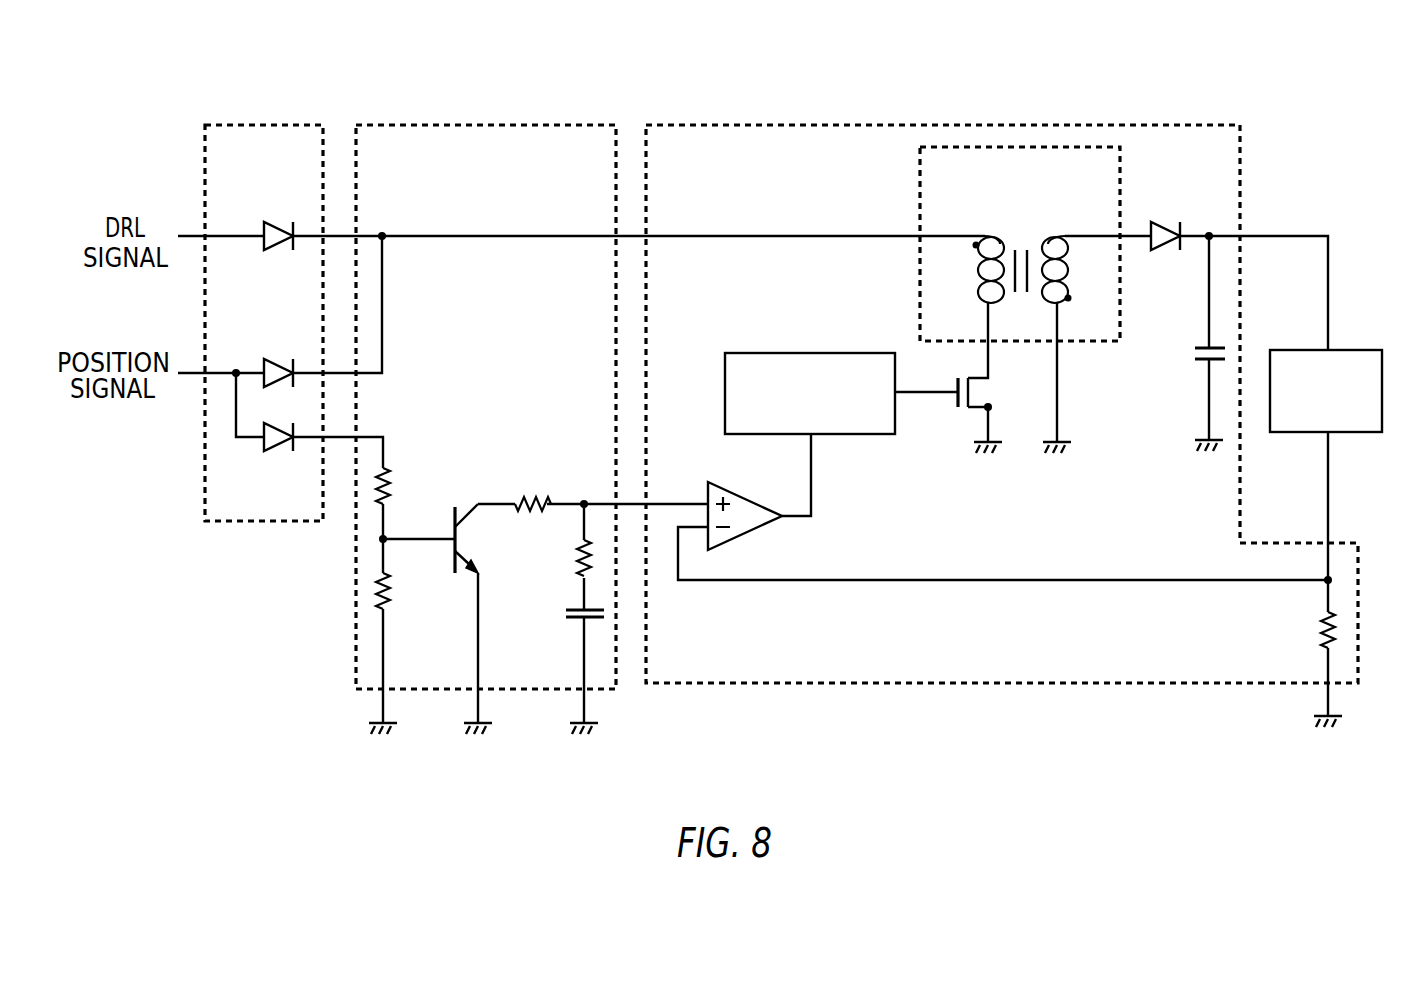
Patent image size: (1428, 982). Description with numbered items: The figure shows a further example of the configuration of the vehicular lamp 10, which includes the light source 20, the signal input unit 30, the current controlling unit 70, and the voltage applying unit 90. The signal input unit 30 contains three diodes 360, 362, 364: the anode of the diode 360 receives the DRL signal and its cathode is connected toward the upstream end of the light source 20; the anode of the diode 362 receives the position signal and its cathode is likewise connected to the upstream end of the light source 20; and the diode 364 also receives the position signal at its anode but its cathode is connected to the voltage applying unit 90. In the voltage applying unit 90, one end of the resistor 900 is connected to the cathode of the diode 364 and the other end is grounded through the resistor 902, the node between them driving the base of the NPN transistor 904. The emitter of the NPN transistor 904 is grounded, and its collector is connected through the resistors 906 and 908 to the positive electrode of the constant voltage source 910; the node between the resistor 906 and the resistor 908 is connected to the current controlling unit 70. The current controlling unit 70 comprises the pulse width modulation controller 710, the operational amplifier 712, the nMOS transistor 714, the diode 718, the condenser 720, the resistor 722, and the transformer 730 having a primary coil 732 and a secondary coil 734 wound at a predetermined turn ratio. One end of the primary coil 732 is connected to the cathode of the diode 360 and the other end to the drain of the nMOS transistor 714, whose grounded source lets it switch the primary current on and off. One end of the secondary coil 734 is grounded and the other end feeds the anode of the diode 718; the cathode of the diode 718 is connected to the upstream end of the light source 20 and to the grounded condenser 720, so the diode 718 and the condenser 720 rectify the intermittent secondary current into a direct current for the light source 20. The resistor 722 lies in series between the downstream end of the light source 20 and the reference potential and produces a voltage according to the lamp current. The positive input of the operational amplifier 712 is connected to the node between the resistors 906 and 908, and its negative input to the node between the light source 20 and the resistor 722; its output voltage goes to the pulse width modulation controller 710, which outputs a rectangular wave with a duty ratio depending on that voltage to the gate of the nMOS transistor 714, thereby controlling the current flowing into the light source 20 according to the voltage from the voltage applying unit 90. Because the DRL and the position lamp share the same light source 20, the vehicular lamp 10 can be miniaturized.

The vehicular lamp 10 is at (1345, 67).
The light source 20 is at (1356, 350).
The signal input unit 30 is at (263, 125).
The current controlling unit 70 is at (958, 123).
The voltage applying unit 90 is at (483, 125).
The diode 360 is at (276, 224).
The diode 362 is at (278, 362).
The diode 364 is at (280, 452).
The pulse width modulation controller 710 is at (781, 353).
The operational amplifier 712 is at (744, 535).
The nMOS transistor 714 is at (951, 412).
The diode 718 is at (1165, 218).
The condenser 720 is at (1202, 368).
The resistor 722 is at (1320, 630).
The transformer 730 is at (920, 190).
The primary coil 732 is at (983, 226).
The secondary coil 734 is at (1058, 226).
The resistor 900 is at (397, 488).
The resistor 902 is at (397, 592).
The NPN transistor 904 is at (475, 538).
The resistor 906 is at (532, 498).
The resistor 908 is at (573, 557).
The constant voltage source 910 is at (568, 617).